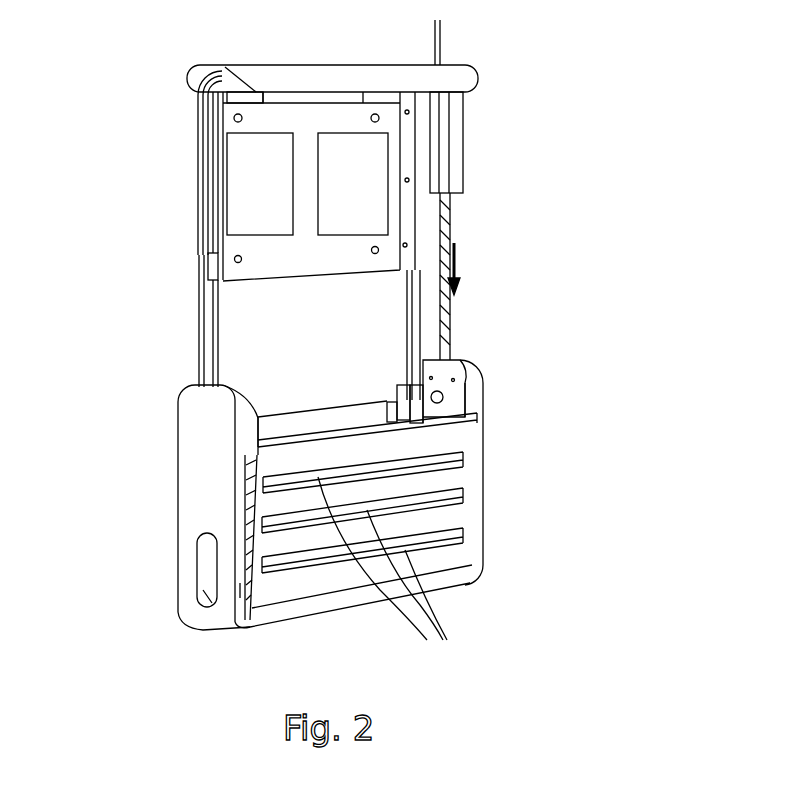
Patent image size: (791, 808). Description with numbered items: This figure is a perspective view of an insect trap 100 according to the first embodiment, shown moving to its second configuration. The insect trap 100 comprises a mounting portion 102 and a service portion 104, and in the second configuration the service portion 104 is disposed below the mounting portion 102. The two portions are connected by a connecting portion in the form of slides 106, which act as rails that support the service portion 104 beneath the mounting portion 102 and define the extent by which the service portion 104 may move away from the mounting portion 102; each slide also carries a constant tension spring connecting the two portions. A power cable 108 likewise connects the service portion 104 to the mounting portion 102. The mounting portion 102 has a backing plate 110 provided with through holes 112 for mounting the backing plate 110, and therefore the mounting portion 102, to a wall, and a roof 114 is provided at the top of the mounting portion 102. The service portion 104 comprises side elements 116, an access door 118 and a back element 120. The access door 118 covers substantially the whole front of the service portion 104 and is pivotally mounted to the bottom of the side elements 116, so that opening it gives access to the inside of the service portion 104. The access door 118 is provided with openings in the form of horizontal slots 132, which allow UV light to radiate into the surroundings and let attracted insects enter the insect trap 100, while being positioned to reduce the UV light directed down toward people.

The insect trap 100 is at (160, 632).
The mounting portion 102 is at (185, 152).
The service portion 104 is at (492, 472).
The slides 106 is at (200, 362).
The power cable 108 is at (448, 235).
The backing plate 110 is at (305, 200).
The through holes 112 is at (372, 252).
The roof 114 is at (455, 80).
The side elements 116 is at (193, 517).
The access door 118 is at (455, 512).
The back element 120 is at (320, 417).
The horizontal slots 132 is at (391, 576).